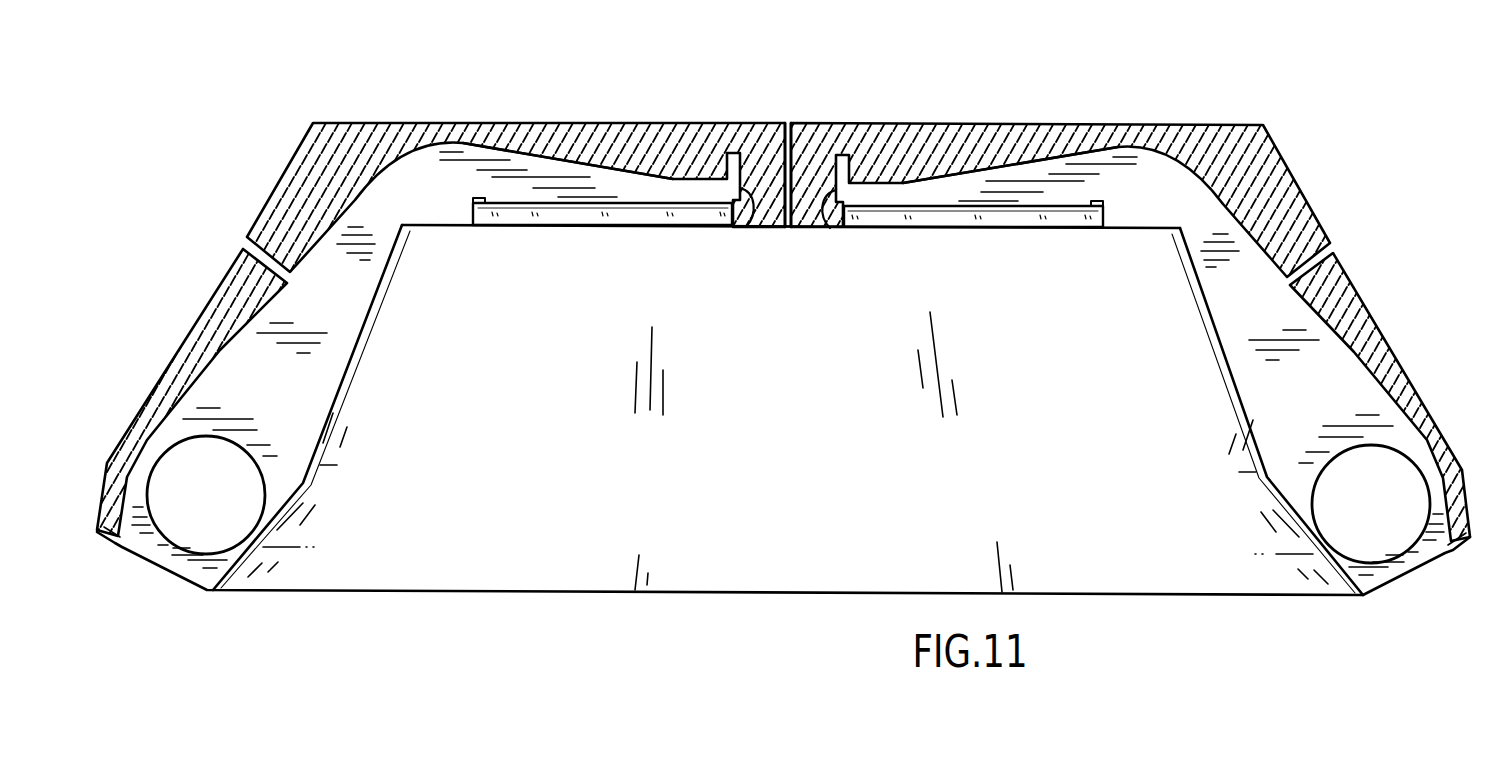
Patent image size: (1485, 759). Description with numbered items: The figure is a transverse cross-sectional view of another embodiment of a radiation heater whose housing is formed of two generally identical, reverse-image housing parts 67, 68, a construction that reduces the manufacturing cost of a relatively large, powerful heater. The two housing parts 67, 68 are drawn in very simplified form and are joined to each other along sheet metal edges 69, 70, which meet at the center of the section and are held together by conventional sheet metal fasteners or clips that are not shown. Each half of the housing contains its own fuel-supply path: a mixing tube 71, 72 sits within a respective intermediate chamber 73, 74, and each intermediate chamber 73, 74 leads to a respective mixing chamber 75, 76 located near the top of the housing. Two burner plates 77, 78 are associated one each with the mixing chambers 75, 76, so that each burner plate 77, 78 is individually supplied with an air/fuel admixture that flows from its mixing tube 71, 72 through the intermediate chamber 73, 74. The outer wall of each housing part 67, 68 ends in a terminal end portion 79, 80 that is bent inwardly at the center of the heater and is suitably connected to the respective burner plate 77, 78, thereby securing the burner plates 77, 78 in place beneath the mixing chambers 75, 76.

The housing part 67 is at (526, 112).
The housing part 68 is at (1013, 112).
The sheet metal edge 69 is at (780, 145).
The sheet metal edge 70 is at (803, 150).
The mixing tube 71 is at (265, 493).
The mixing tube 72 is at (1311, 512).
The intermediate chamber 73 is at (333, 364).
The intermediate chamber 74 is at (1243, 353).
The mixing chamber 75 is at (560, 178).
The mixing chamber 76 is at (1072, 174).
The burner plate 77 is at (560, 218).
The burner plate 78 is at (1045, 222).
The terminal end portion 79 is at (750, 228).
The terminal end portion 80 is at (826, 228).